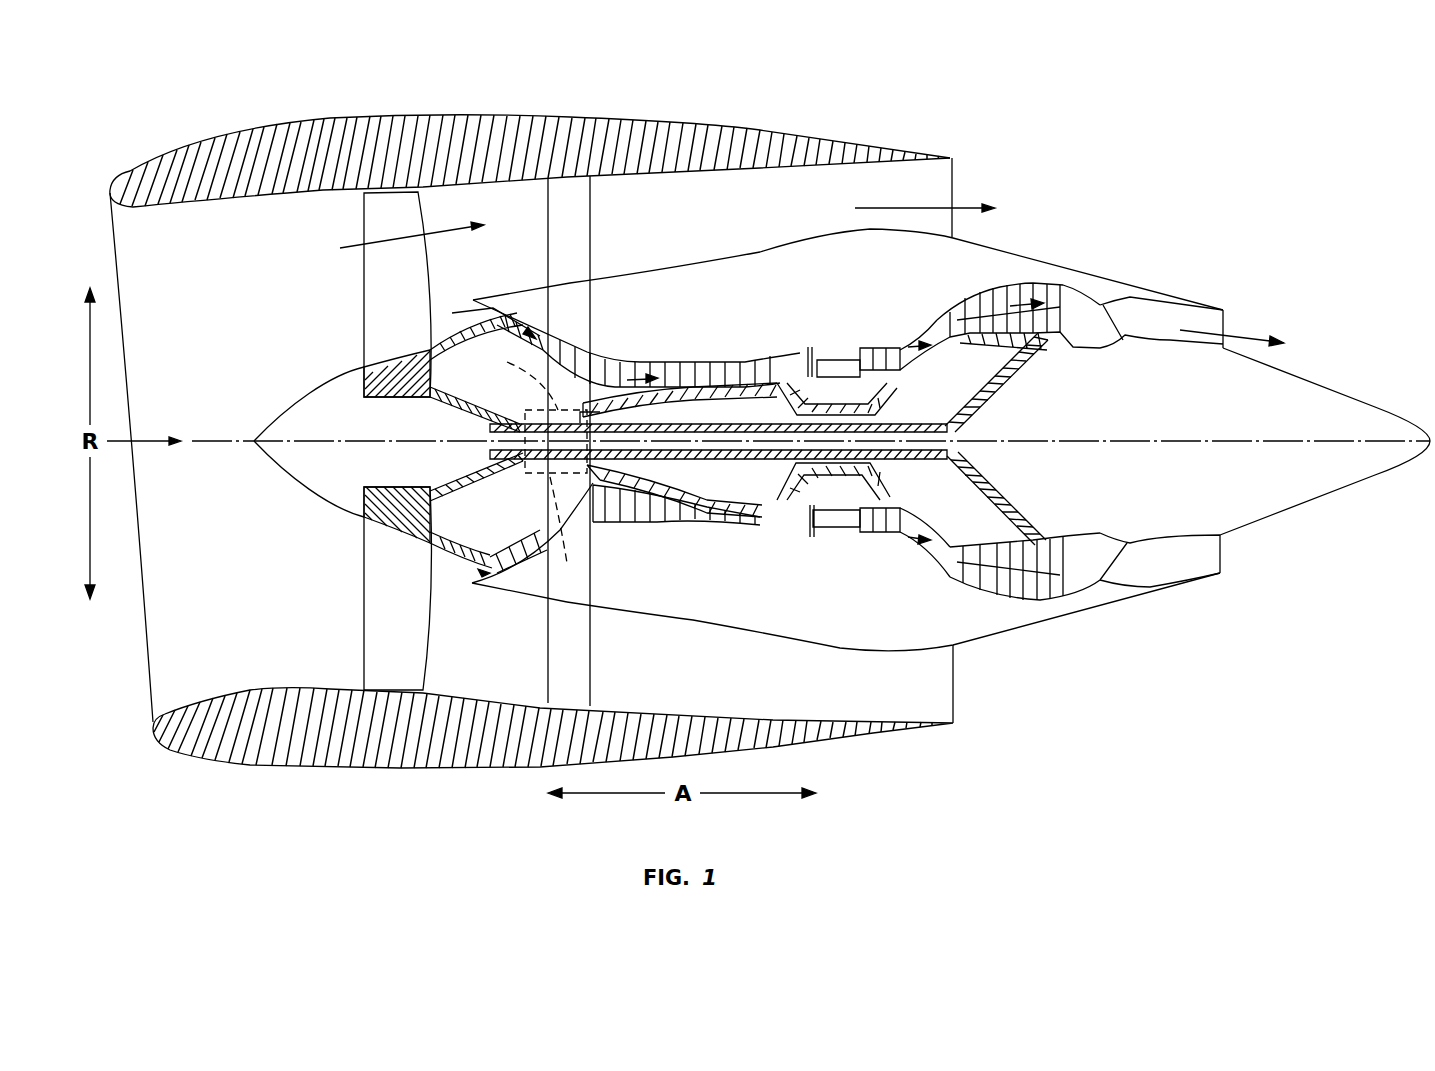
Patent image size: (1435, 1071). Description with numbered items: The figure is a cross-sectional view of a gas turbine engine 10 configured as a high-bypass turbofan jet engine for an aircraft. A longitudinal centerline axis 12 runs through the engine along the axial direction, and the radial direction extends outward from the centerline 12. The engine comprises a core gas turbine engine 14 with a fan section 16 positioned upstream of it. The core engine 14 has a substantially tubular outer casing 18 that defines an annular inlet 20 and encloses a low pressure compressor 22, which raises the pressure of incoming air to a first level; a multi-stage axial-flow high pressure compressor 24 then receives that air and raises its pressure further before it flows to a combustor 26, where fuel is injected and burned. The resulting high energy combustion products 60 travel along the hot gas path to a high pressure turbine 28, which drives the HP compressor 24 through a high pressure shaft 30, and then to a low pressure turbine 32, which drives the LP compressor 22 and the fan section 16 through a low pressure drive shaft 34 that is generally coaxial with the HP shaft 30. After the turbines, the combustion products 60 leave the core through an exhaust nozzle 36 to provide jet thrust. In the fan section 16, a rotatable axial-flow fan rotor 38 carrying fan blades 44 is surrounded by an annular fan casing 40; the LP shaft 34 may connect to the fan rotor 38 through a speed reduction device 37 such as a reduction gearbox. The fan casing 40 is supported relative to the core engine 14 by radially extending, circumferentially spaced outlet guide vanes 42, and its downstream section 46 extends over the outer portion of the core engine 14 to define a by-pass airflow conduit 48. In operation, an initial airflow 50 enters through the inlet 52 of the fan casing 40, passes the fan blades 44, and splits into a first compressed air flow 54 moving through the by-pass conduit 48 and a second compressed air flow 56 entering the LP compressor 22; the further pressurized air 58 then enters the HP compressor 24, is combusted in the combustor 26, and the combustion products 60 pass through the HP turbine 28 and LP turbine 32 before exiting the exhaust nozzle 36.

The gas turbine engine 10 is at (1133, 146).
The centerline axis 12 is at (1122, 440).
The core gas turbine engine 14 is at (835, 307).
The fan section 16 is at (414, 108).
The outer casing 18 is at (770, 637).
The annular inlet 20 is at (473, 583).
The low pressure compressor 22 is at (547, 520).
The high pressure compressor 24 is at (627, 513).
The combustor 26 is at (828, 517).
The high pressure turbine 28 is at (917, 527).
The high pressure shaft 30 is at (837, 403).
The low pressure turbine 32 is at (1043, 600).
The low pressure drive shaft 34 is at (540, 418).
The exhaust nozzle 36 is at (1223, 317).
The speed reduction device 37 is at (536, 463).
The fan rotor 38 is at (430, 400).
The fan casing 40 is at (458, 768).
The outlet guide vanes 42 is at (596, 207).
The fan blades 44 is at (364, 638).
The downstream section of the fan casing 46 is at (795, 130).
The by-pass airflow conduit 48 is at (720, 208).
The initial airflow 50 is at (140, 441).
The inlet 52 is at (148, 688).
The first compressed air flow 54 is at (378, 240).
The second compressed air flow 56 is at (462, 312).
The airflow into the HP compressor 58 is at (610, 370).
The combustion products 60 is at (880, 347).